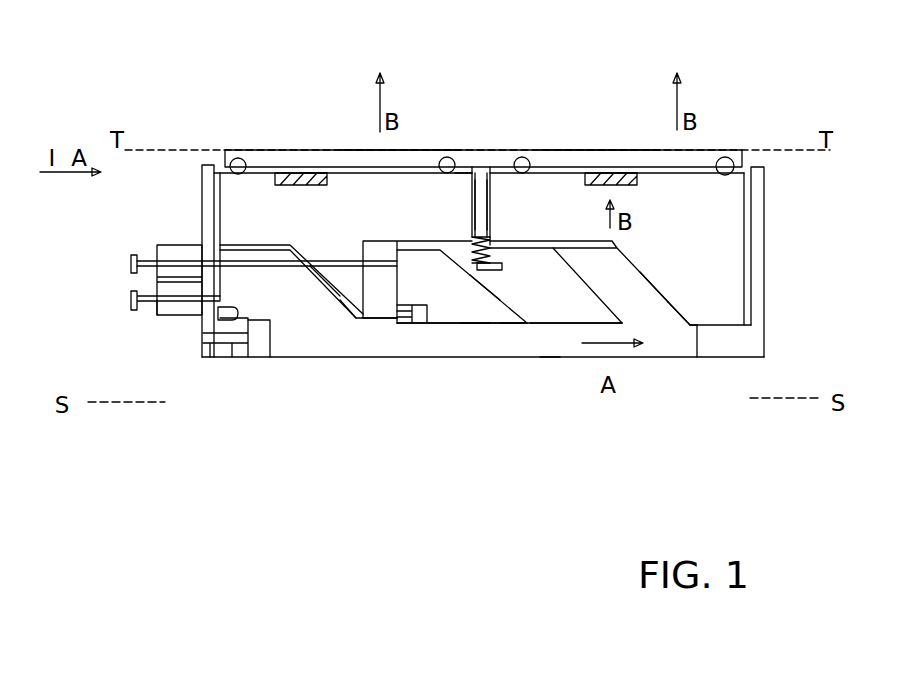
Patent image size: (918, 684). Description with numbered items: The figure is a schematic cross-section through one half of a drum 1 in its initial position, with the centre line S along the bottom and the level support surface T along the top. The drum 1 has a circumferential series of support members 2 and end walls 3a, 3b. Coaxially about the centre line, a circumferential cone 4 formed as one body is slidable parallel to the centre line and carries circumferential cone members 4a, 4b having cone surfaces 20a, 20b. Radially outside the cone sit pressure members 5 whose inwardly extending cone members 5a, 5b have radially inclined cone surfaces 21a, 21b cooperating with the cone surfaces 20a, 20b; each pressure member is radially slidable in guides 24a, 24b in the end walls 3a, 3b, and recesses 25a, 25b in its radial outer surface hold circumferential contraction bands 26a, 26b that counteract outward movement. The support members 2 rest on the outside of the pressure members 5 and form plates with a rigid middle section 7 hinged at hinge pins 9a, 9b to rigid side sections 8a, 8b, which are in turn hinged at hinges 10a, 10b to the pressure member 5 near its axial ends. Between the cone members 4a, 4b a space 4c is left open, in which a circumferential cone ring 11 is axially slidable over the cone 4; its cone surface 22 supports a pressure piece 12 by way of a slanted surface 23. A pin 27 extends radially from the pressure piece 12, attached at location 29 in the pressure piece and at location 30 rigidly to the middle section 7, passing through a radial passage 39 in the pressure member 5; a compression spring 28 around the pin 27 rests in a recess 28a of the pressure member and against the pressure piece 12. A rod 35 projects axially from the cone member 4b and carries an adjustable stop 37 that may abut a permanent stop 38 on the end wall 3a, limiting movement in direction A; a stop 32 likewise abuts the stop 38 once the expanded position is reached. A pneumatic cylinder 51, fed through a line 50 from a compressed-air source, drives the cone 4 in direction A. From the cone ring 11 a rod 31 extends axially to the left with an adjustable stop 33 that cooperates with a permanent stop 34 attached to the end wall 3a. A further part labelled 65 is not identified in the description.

The drum 1 is at (500, 67).
The support members 2 is at (703, 148).
The end wall 3a is at (202, 188).
The end wall 3b is at (760, 228).
The cone 4 is at (312, 337).
The cone member 4a is at (615, 298).
The cone member 4b is at (258, 299).
The space 4c is at (587, 310).
The pressure members 5 is at (681, 226).
The cone member 5a is at (696, 282).
The cone member 5b is at (318, 224).
The middle section 7 is at (480, 157).
The side section 8a is at (583, 157).
The side section 8b is at (407, 157).
The hinge pin 9a is at (522, 157).
The hinge pin 9b is at (447, 157).
The hinge 10a is at (728, 160).
The hinge 10b is at (237, 158).
The cone ring 11 is at (416, 286).
The pressure piece 12 is at (497, 283).
The cone surface 20a is at (658, 300).
The cone surface 20b is at (327, 295).
The cone surface 21a is at (677, 325).
The cone surface 21b is at (353, 315).
The cone surface 22 is at (475, 285).
The slanted surface 23 is at (512, 310).
The guide 24a is at (214, 205).
The guide 24b is at (757, 282).
The recess 25a is at (597, 173).
The recess 25b is at (278, 173).
The contraction band 26a is at (627, 173).
The contraction band 26b is at (318, 173).
The pin 27 is at (490, 210).
The compression spring 28 is at (472, 245).
The recess 28a is at (493, 232).
The attachment location 29 is at (502, 268).
The attachment location 30 is at (463, 174).
The rod 31 is at (150, 267).
The stop 32 is at (382, 245).
The stop 33 is at (131, 262).
The permanent stop 34 is at (178, 250).
The rod 35 is at (168, 298).
The stop 37 is at (131, 300).
The permanent stop 38 is at (182, 317).
The radial passage 39 is at (490, 185).
The line 50 is at (202, 359).
The pneumatic cylinder 51 is at (260, 333).
The outlet 65 is at (547, 323).